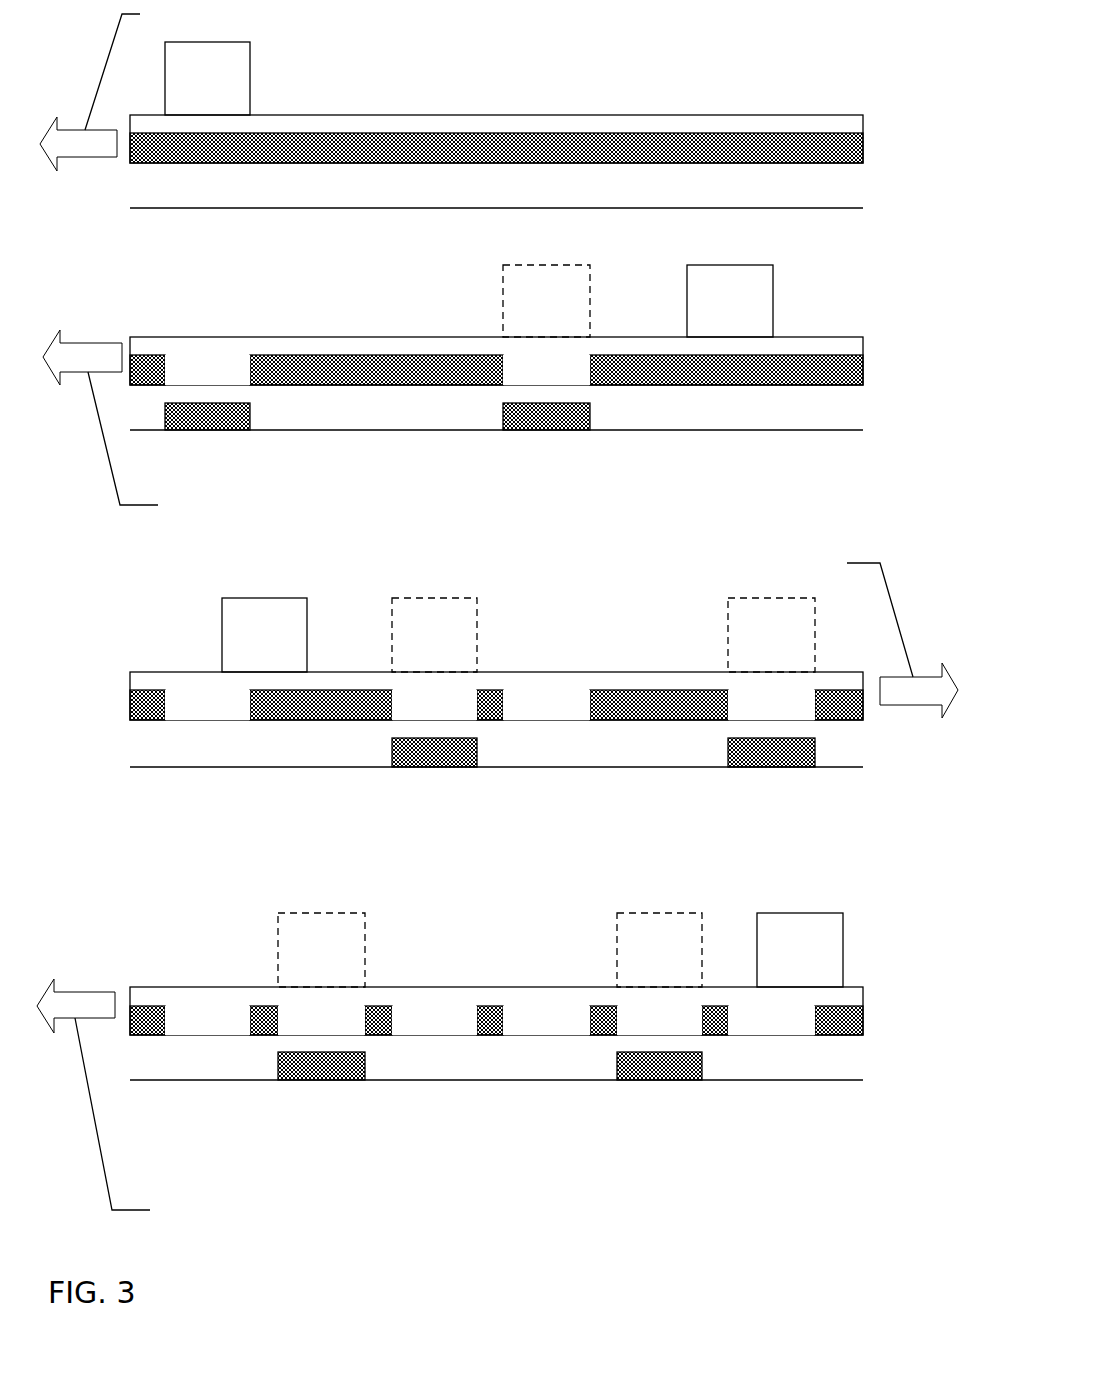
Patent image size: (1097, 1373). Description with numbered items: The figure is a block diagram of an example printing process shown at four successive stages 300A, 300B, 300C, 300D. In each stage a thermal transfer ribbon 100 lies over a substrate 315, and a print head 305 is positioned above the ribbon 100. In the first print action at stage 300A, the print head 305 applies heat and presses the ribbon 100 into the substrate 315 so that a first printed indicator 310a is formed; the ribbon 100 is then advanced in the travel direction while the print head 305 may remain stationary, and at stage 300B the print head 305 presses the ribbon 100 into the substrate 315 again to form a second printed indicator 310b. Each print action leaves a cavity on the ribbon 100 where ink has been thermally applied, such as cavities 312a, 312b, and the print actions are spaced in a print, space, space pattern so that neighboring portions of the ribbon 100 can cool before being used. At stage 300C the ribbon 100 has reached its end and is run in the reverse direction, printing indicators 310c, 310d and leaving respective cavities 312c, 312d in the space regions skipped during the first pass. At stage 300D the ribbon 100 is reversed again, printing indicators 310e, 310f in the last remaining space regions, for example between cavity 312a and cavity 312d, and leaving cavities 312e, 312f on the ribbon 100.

The thermal transfer ribbon 100 is at (723, 115).
The print head 305 is at (504, 514).
The substrate 315 is at (770, 208).
The first printed indicator 310a is at (212, 430).
The second printed indicator 310b is at (530, 430).
The indicator 310c is at (768, 767).
The indicator 310d is at (417, 767).
The indicator 310e is at (323, 1080).
The indicator 310f is at (637, 1080).
The cavity 312a is at (207, 695).
The cavity 312b is at (546, 695).
The cavity 312c is at (771, 863).
The cavity 312d is at (434, 863).
The cavity 312e is at (321, 1021).
The cavity 312f is at (659, 1021).
The stage 300A is at (498, 121).
The stage 300B is at (499, 423).
The stage 300C is at (783, 678).
The stage 300D is at (497, 1100).